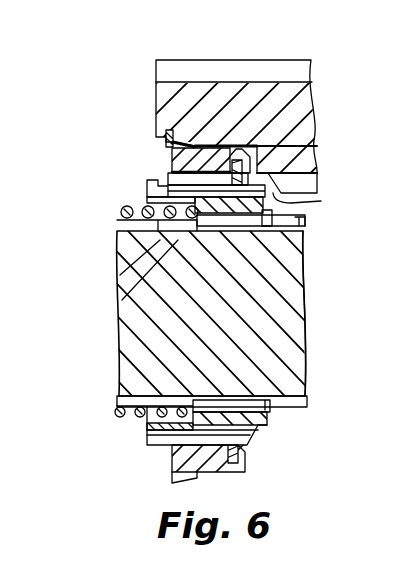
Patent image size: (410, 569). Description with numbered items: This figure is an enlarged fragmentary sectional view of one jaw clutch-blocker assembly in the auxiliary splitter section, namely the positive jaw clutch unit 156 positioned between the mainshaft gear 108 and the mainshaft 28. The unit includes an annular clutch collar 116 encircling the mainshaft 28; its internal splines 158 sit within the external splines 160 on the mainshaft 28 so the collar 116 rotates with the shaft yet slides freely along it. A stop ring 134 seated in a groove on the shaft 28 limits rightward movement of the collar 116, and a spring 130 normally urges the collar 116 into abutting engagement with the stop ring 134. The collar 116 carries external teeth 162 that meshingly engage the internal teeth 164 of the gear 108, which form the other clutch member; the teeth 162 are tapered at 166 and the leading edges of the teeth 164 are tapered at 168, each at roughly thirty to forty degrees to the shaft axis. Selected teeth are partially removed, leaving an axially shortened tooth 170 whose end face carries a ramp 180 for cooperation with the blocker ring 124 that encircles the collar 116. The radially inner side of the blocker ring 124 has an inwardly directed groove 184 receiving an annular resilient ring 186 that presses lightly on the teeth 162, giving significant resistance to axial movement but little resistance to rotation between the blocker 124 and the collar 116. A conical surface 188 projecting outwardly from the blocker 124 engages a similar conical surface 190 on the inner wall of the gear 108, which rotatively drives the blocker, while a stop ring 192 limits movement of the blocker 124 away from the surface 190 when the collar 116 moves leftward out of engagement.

The mainshaft gear 108 is at (250, 57).
The conical surface 188 is at (186, 136).
The conical surface 190 is at (164, 137).
The stop ring 192 is at (170, 150).
The inwardly directed groove 184 is at (258, 146).
The annular resilient ring 186 is at (242, 168).
The internal teeth 164 is at (315, 180).
The taper 168 is at (293, 203).
The blocker ring 124 is at (152, 184).
The partially removed tooth 170 is at (136, 190).
The jaw clutch unit 156 is at (158, 232).
The ramp 180 is at (221, 231).
The external splines 160 is at (305, 224).
The stop ring 134 is at (302, 215).
The internal splines 158 is at (305, 268).
The mainshaft 28 is at (132, 352).
The clutch collar 116 is at (120, 275).
The spring 130 is at (122, 300).
The external teeth 162 is at (153, 435).
The taper 166 is at (260, 432).